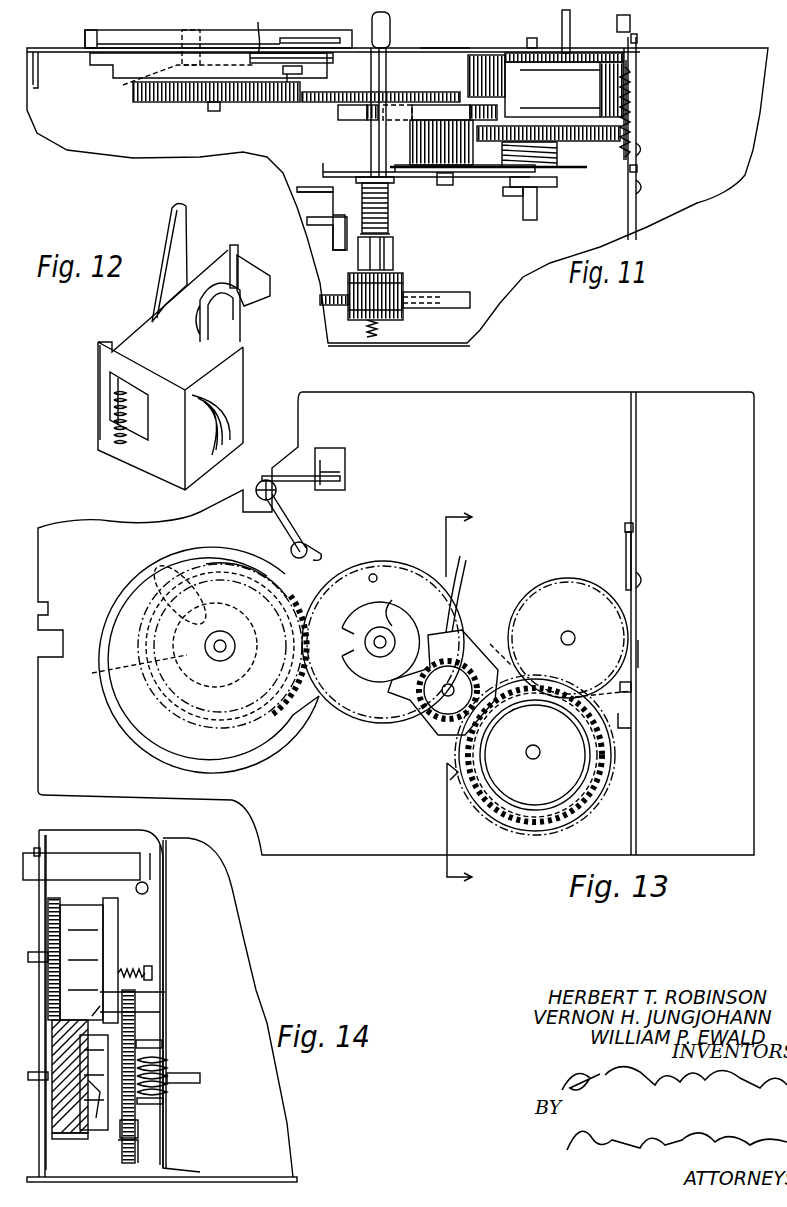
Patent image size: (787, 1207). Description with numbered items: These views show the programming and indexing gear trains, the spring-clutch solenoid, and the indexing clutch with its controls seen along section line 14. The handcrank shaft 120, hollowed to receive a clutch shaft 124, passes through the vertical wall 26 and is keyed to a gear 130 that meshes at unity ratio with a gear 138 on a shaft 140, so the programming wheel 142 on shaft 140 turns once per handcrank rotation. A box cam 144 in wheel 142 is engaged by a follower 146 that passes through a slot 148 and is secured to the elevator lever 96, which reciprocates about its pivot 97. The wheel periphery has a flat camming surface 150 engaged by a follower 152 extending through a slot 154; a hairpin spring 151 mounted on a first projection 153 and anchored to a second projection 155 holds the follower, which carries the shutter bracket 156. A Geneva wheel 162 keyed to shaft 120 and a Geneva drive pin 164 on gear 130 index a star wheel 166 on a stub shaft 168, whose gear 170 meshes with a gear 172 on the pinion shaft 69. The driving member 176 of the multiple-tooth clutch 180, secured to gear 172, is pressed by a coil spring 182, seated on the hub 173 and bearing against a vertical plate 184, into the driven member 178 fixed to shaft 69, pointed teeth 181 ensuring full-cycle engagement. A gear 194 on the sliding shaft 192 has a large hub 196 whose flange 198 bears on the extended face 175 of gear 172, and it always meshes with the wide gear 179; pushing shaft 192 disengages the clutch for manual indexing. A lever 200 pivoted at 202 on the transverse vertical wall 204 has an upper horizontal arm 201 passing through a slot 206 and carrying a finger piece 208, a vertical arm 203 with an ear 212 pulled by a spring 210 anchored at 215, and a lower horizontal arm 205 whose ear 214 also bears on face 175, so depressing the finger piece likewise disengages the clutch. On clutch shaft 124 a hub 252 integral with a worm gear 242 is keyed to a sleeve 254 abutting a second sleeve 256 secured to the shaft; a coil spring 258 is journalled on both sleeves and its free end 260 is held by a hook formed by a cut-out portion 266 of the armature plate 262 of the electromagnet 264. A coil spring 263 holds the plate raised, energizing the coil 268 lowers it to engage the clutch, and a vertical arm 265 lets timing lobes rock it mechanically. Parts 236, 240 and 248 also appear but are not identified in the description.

In FIG. 13, the section line 14 is at (473, 699).
In FIG. 11, the vertical wall 26 is at (413, 48).
In FIG. 13, the vertical wall 26 is at (526, 444).
In FIG. 14, the vertical wall 26 is at (44, 862).
In FIG. 11, the pinion shaft 69 is at (527, 41).
In FIG. 13, the pinion shaft 69 is at (528, 761).
In FIG. 14, the pinion shaft 69 is at (208, 1075).
In FIG. 11, the elevator lever 96 is at (128, 30).
In FIG. 11, the pivot 97 is at (85, 40).
In FIG. 11, the handcrank shaft 120 is at (392, 30).
In FIG. 13, the handcrank shaft 120 is at (372, 666).
In FIG. 11, the clutch shaft 124 is at (372, 20).
In FIG. 13, the clutch shaft 124 is at (374, 634).
In FIG. 11, the gear 130 is at (440, 92).
In FIG. 13, the gear 130 is at (372, 730).
In FIG. 11, the gear 138 is at (153, 104).
In FIG. 13, the gear 138 is at (296, 714).
In FIG. 11, the shaft 140 is at (206, 108).
In FIG. 13, the shaft 140 is at (228, 656).
In FIG. 11, the programming wheel 142 is at (108, 72).
In FIG. 13, the programming wheel 142 is at (258, 770).
In FIG. 11, the box cam 144 is at (128, 86).
In FIG. 13, the box cam 144 is at (117, 668).
In FIG. 11, the follower 146 is at (188, 30).
In FIG. 13, the follower 146 is at (187, 610).
In FIG. 13, the slot 148 is at (158, 574).
In FIG. 13, the flat camming surface 150 is at (168, 566).
In FIG. 11, the hairpin spring 151 is at (277, 33).
In FIG. 13, the hairpin spring 151 is at (298, 476).
In FIG. 11, the follower 152 is at (284, 104).
In FIG. 13, the follower 152 is at (290, 528).
In FIG. 13, the first projection 153 is at (262, 502).
In FIG. 13, the slot 154 is at (310, 544).
In FIG. 13, the second projection 155 is at (338, 448).
In FIG. 11, the shutter bracket 156 is at (322, 38).
In FIG. 11, the Geneva wheel 162 is at (338, 112).
In FIG. 13, the Geneva wheel 162 is at (407, 606).
In FIG. 11, the Geneva drive pin 164 is at (367, 122).
In FIG. 13, the Geneva drive pin 164 is at (375, 574).
In FIG. 11, the star wheel 166 is at (398, 124).
In FIG. 13, the star wheel 166 is at (467, 586).
In FIG. 11, the stub shaft 168 is at (438, 176).
In FIG. 13, the stub shaft 168 is at (445, 698).
In FIG. 11, the gear 170 is at (460, 172).
In FIG. 13, the gear 170 is at (432, 740).
In FIG. 11, the gear 172 is at (557, 151).
In FIG. 13, the gear 172 is at (447, 778).
In FIG. 14, the gear 172 is at (138, 1131).
In FIG. 11, the hub 173 is at (510, 196).
In FIG. 14, the hub 173 is at (170, 1093).
In FIG. 11, the extended face 175 is at (530, 126).
In FIG. 13, the extended face 175 is at (566, 819).
In FIG. 14, the extended face 175 is at (136, 1031).
In FIG. 14, the driving member 176 is at (138, 1151).
In FIG. 14, the driven member 178 is at (98, 1130).
In FIG. 11, the wide gear 179 is at (476, 55).
In FIG. 13, the wide gear 179 is at (637, 695).
In FIG. 14, the wide gear 179 is at (60, 1140).
In FIG. 11, the multiple-tooth clutch 180 is at (648, 92).
In FIG. 14, the multiple-tooth clutch 180 is at (166, 993).
In FIG. 14, the pointed teeth 181 is at (96, 1120).
In FIG. 11, the coil spring 182 is at (552, 185).
In FIG. 14, the coil spring 182 is at (163, 1105).
In FIG. 11, the vertical plate 184 is at (323, 164).
In FIG. 14, the vertical plate 184 is at (167, 929).
In FIG. 11, the shaft 192 is at (562, 25).
In FIG. 13, the shaft 192 is at (576, 631).
In FIG. 14, the shaft 192 is at (48, 956).
In FIG. 11, the gear 194 is at (580, 53).
In FIG. 13, the gear 194 is at (489, 641).
In FIG. 14, the gear 194 is at (63, 913).
In FIG. 14, the large hub 196 is at (78, 905).
In FIG. 11, the flange 198 is at (623, 101).
In FIG. 13, the flange 198 is at (544, 592).
In FIG. 14, the flange 198 is at (118, 914).
In FIG. 11, the lever 200 is at (640, 191).
In FIG. 13, the lever 200 is at (639, 655).
In FIG. 14, the lever 200 is at (182, 891).
In FIG. 11, the upper horizontal arm 201 is at (668, 66).
In FIG. 14, the upper horizontal arm 201 is at (118, 845).
In FIG. 11, the pivot 202 is at (640, 151).
In FIG. 13, the pivot 202 is at (643, 579).
In FIG. 14, the pivot 202 is at (140, 882).
In FIG. 14, the vertical arm 203 is at (170, 907).
In FIG. 11, the transverse vertical wall 204 is at (636, 223).
In FIG. 13, the transverse vertical wall 204 is at (636, 500).
In FIG. 14, the transverse vertical wall 204 is at (62, 830).
In FIG. 14, the lower horizontal arm 205 is at (162, 1047).
In FIG. 11, the slot 206 is at (630, 59).
In FIG. 13, the slot 206 is at (626, 561).
In FIG. 14, the slot 206 is at (52, 847).
In FIG. 11, the finger piece 208 is at (630, 19).
In FIG. 13, the finger piece 208 is at (625, 528).
In FIG. 14, the finger piece 208 is at (37, 848).
In FIG. 11, the spring 210 is at (636, 133).
In FIG. 14, the spring 210 is at (128, 970).
In FIG. 11, the ear 212 is at (637, 171).
In FIG. 13, the ear 212 is at (634, 687).
In FIG. 14, the ear 212 is at (154, 973).
In FIG. 11, the ear 214 is at (508, 171).
In FIG. 13, the ear 214 is at (632, 721).
In FIG. 14, the ear 214 is at (160, 1013).
In FIG. 11, the spring anchorage 215 is at (653, 31).
In FIG. 11, the shaft 236 is at (446, 308).
In FIG. 11, the worm gear 240 is at (403, 281).
In FIG. 11, the worm gear 242 is at (320, 300).
In FIG. 11, the spring 248 is at (367, 328).
In FIG. 11, the hub 252 is at (393, 256).
In FIG. 11, the sleeve 254 is at (358, 252).
In FIG. 11, the second sleeve 256 is at (333, 211).
In FIG. 11, the coil spring 258 is at (388, 211).
In FIG. 11, the free end 260 is at (390, 236).
In FIG. 12, the free end 260 is at (234, 245).
In FIG. 11, the armature plate 262 is at (307, 238).
In FIG. 12, the coil spring 263 is at (112, 421).
In FIG. 12, the electromagnet 264 is at (116, 337).
In FIG. 11, the vertical arm 265 is at (297, 190).
In FIG. 12, the vertical arm 265 is at (165, 232).
In FIG. 12, the cut-out portion 266 is at (240, 346).
In FIG. 12, the coil 268 is at (225, 409).